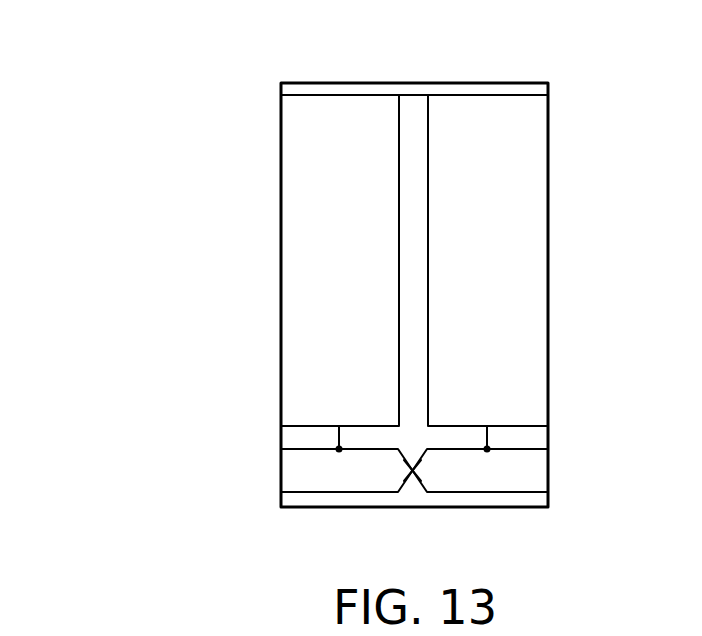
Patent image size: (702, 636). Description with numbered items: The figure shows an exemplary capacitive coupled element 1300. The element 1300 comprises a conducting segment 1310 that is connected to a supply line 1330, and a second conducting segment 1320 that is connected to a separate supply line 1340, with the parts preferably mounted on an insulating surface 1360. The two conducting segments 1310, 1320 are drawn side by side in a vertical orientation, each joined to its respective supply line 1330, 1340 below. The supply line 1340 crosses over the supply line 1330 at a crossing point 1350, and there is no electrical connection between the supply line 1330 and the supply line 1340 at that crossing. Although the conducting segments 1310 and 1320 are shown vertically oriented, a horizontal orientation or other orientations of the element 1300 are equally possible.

The capacitive coupled element 1300 is at (101, 88).
The conducting segment 1310 is at (281, 172).
The conducting segment 1320 is at (548, 172).
The supply line 1330 is at (281, 449).
The supply line 1340 is at (281, 492).
The crossing point 1350 is at (413, 483).
The insulating surface 1360 is at (412, 83).